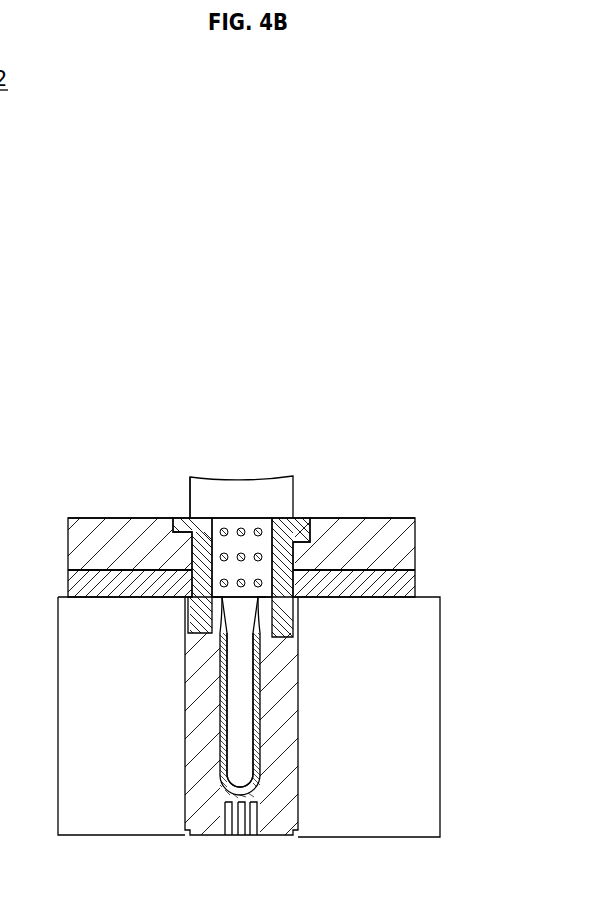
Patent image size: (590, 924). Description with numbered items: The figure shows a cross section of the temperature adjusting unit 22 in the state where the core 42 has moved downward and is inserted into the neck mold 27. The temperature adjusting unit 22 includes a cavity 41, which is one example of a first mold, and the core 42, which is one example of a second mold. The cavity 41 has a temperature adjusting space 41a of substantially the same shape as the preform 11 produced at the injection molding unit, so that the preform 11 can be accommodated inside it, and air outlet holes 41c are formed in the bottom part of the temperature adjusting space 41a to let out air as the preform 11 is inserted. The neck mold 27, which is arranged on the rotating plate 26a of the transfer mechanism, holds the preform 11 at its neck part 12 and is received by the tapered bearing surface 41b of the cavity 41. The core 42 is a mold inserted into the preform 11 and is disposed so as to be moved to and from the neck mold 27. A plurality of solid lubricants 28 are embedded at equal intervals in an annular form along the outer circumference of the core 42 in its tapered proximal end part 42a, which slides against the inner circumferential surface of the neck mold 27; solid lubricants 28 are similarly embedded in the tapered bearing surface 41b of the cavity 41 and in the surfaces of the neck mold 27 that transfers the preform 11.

The temperature adjusting unit 22 is at (383, 444).
The core 42 is at (178, 482).
The tapered proximal end part 42a is at (200, 548).
The neck mold 27 is at (295, 518).
The rotating plate 26a is at (383, 518).
The solid lubricants 28 is at (262, 532).
The tapered bearing surface 41b is at (193, 562).
The neck part 12 is at (216, 612).
The preform 11 is at (258, 690).
The cavity 41 is at (283, 851).
The temperature adjusting space 41a is at (217, 782).
The air outlet holes 41c is at (230, 706).